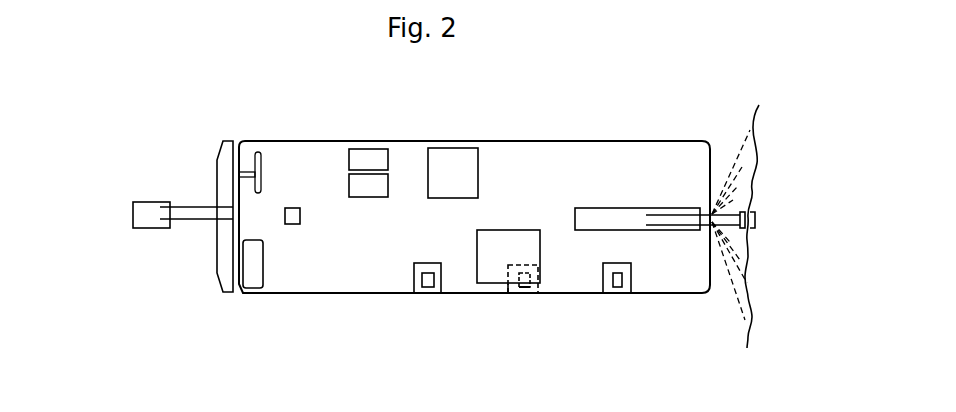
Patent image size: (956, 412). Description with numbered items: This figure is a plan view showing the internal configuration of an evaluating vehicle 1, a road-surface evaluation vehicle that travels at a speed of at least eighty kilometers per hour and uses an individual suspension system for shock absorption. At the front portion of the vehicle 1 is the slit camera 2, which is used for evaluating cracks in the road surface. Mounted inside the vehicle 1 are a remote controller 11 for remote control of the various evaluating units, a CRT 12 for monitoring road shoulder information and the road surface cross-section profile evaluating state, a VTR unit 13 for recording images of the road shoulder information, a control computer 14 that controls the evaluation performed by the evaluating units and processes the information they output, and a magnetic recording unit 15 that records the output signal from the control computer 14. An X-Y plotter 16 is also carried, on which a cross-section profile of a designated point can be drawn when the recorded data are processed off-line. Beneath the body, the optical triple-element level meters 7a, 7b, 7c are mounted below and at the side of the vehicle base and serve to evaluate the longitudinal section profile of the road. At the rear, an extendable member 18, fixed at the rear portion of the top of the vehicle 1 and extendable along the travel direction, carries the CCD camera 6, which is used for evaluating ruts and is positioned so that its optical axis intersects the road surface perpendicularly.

The evaluating vehicle 1 is at (378, 272).
The slit camera 2 is at (147, 220).
The CCD camera 6 is at (757, 218).
The optical triple-element level meter 7a is at (422, 294).
The optical triple-element level meter 7b is at (517, 294).
The optical triple-element level meter 7c is at (607, 294).
The remote controller 11 is at (258, 270).
The CRT 12 is at (292, 218).
The VTR unit 13 is at (363, 186).
The control computer 14 is at (510, 262).
The magnetic recording unit 15 is at (462, 185).
The X-Y plotter 16 is at (370, 155).
The extendable member 18 is at (617, 222).